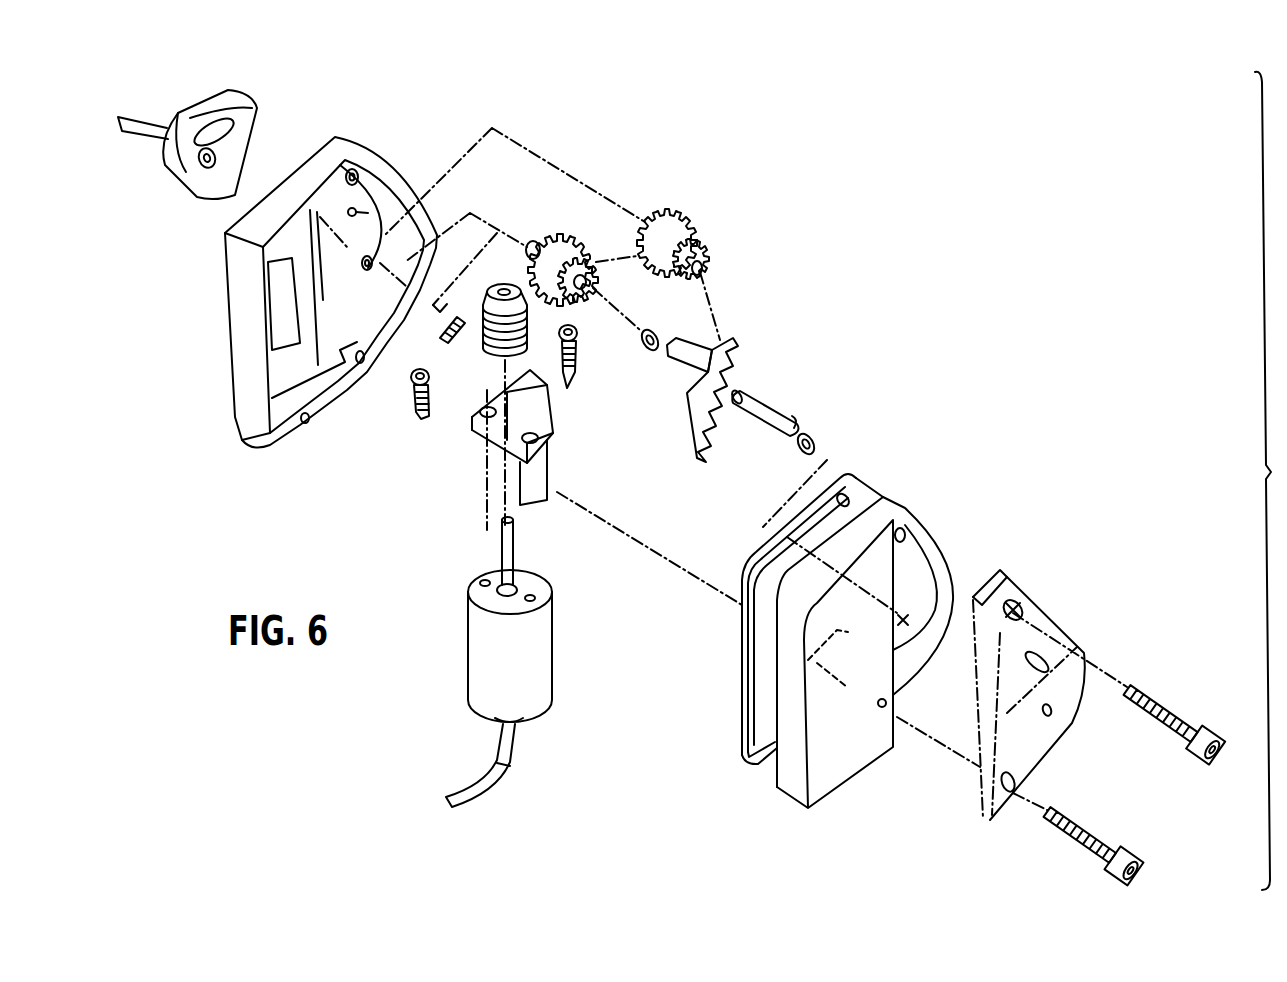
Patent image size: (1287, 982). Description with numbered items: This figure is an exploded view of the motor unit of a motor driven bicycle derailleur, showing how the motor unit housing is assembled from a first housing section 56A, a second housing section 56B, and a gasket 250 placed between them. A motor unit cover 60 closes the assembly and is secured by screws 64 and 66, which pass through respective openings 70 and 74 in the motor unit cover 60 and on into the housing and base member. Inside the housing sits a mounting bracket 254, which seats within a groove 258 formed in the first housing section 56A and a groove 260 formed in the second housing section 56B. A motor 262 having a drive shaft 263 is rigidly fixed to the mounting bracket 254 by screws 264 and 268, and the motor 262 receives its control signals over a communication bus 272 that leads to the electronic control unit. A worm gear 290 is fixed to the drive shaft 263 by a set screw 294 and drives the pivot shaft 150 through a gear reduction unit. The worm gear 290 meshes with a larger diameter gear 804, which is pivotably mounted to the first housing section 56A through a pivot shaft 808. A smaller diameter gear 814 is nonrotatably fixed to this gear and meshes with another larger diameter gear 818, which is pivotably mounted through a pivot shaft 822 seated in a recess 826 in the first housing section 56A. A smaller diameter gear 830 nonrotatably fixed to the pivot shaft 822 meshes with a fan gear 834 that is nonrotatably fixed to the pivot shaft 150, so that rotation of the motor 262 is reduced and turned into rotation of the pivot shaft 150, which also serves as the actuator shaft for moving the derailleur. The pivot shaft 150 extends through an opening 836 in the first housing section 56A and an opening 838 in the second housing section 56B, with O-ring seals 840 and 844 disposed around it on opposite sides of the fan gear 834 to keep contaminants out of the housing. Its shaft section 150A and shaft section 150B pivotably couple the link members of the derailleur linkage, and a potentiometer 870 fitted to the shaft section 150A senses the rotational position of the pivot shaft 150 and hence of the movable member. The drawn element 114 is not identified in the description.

The first housing section 56A is at (240, 360).
The second housing section 56B is at (797, 790).
The motor unit cover 60 is at (1052, 612).
The screw 64 is at (1217, 724).
The screw 66 is at (1127, 852).
The opening 70 is at (1027, 596).
The opening 74 is at (1013, 805).
The slot 114 is at (1047, 673).
The pivot shaft 150 is at (780, 405).
The shaft section 150A is at (680, 367).
The shaft section 150B is at (757, 397).
The gasket 250 is at (750, 713).
The mounting bracket 254 is at (548, 463).
The groove 258 is at (302, 323).
The groove 260 is at (836, 671).
The motor 262 is at (540, 626).
The drive shaft 263 is at (513, 545).
The screw 264 is at (416, 398).
The screw 268 is at (582, 340).
The communication bus 272 is at (517, 745).
The worm gear 290 is at (486, 355).
The set screw 294 is at (440, 327).
The larger diameter gear 804 is at (560, 236).
The pivot shaft 808 is at (530, 246).
The smaller diameter gear 814 is at (592, 262).
The larger diameter gear 818 is at (667, 210).
The pivot shaft 822 is at (703, 226).
The recess 826 is at (365, 195).
The smaller diameter gear 830 is at (703, 268).
The fan gear 834 is at (743, 358).
The opening 836 is at (433, 210).
The opening 838 is at (907, 620).
The O-ring seal 840 is at (646, 331).
The O-ring seal 844 is at (797, 455).
The potentiometer 870 is at (200, 95).